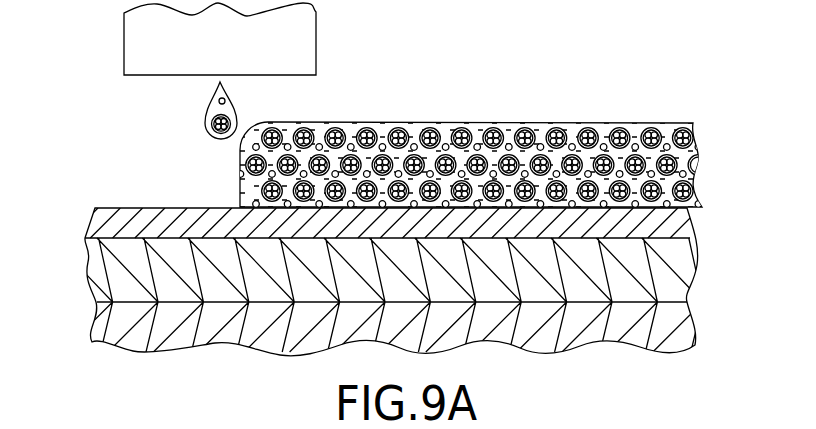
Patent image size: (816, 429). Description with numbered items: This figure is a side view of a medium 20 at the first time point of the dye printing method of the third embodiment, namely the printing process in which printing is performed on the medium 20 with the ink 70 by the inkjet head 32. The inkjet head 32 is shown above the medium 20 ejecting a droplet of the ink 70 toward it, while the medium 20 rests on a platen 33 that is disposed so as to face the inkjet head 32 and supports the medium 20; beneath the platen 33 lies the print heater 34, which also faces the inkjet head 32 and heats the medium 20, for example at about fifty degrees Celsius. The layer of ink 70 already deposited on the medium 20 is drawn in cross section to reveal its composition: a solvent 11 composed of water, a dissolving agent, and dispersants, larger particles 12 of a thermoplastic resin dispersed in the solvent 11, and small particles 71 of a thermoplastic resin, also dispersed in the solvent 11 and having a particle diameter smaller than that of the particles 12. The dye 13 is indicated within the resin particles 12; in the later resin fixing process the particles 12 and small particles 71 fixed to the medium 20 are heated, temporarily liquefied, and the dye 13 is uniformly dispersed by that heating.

The solvent 11 is at (638, 128).
The particles 12 is at (533, 132).
The dye 13 is at (597, 135).
The medium 20 is at (663, 228).
The inkjet head 32 is at (143, 58).
The platen 33 is at (663, 273).
The print heater 34 is at (663, 333).
The ink 70 is at (207, 108).
The small particles 71 is at (447, 141).